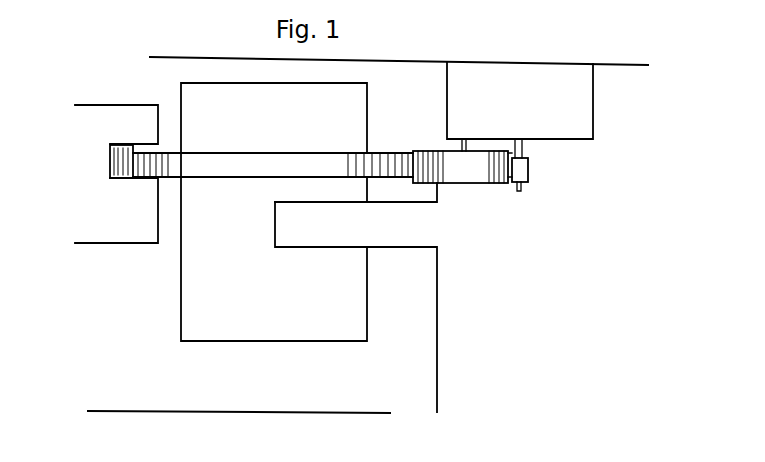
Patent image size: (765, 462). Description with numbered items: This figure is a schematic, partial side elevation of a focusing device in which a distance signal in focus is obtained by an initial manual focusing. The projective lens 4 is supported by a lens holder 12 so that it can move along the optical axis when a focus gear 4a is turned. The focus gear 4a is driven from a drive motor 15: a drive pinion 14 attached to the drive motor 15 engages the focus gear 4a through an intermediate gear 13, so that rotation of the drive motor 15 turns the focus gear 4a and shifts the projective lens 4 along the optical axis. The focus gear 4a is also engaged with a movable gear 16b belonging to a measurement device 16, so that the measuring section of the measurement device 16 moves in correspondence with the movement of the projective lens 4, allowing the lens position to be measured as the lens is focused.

The projective lens 4 is at (192, 320).
The focus gear 4a is at (253, 163).
The lens holder 12 is at (323, 238).
The intermediate gear 13 is at (470, 178).
The drive pinion 14 is at (530, 172).
The drive motor 15 is at (570, 105).
The measurement device 16 is at (106, 99).
The movable gear 16b is at (123, 163).